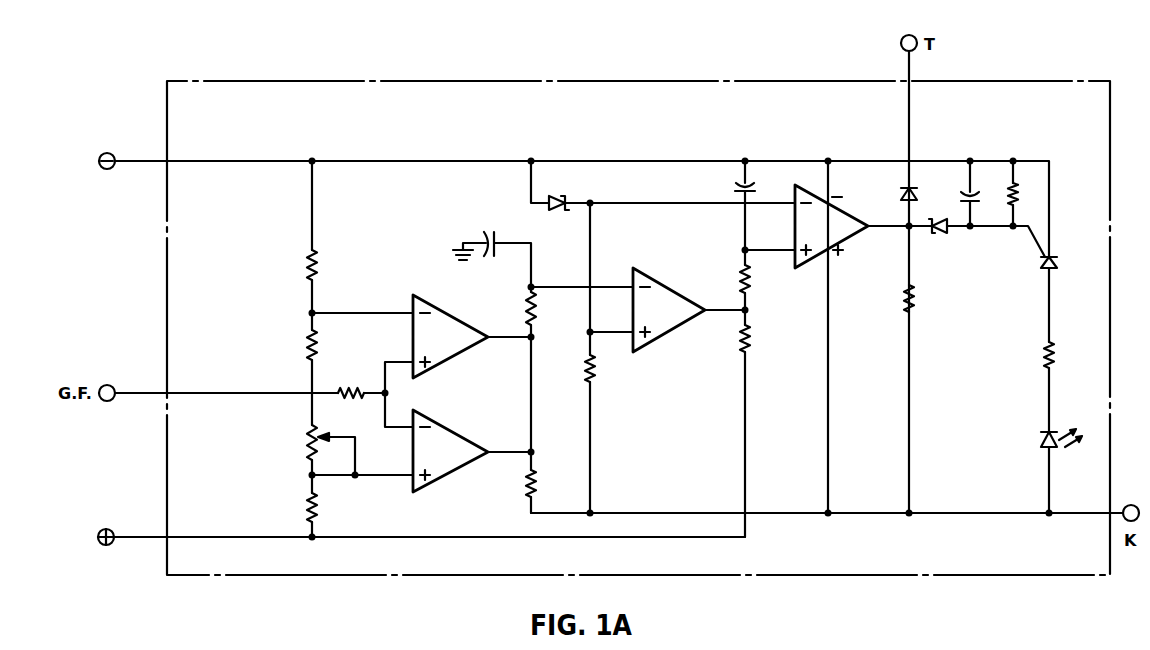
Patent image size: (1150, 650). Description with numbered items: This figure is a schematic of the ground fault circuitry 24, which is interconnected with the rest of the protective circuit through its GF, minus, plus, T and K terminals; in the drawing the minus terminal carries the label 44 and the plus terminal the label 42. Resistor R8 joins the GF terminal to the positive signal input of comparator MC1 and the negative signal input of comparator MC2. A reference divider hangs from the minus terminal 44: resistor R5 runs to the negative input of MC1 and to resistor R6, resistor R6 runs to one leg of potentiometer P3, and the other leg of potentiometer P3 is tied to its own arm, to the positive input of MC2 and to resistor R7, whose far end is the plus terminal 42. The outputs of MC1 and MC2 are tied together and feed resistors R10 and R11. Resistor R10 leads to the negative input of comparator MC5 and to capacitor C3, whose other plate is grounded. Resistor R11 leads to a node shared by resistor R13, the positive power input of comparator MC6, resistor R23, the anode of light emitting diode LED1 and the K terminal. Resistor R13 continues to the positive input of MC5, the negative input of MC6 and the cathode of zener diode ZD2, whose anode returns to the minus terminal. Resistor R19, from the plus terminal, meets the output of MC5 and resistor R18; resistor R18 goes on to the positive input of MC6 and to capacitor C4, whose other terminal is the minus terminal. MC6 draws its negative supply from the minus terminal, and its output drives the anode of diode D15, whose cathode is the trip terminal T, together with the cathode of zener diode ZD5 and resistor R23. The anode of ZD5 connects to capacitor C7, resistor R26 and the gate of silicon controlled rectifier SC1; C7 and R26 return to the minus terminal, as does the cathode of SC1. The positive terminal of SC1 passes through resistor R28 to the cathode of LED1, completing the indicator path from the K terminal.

The ground fault circuitry 24 is at (650, 129).
The positive supply terminal 42 is at (101, 546).
The negative supply terminal 44 is at (112, 152).
The resistor R5 is at (318, 266).
The resistor R6 is at (318, 349).
The resistor R7 is at (319, 509).
The resistor R8 is at (360, 388).
The potentiometer P3 is at (318, 429).
The resistor R10 is at (538, 312).
The resistor R11 is at (538, 478).
The resistor R13 is at (597, 369).
The resistor R18 is at (752, 275).
The resistor R19 is at (750, 342).
The resistor R23 is at (916, 298).
The resistor R26 is at (1006, 196).
The resistor R28 is at (1056, 352).
The capacitor C3 is at (492, 231).
The capacitor C4 is at (733, 191).
The capacitor C7 is at (960, 196).
The zener diode ZD2 is at (562, 196).
The zener diode ZD5 is at (936, 235).
The diode D15 is at (898, 196).
The comparator MC1 is at (450, 336).
The comparator MC2 is at (450, 451).
The comparator MC5 is at (669, 310).
The comparator MC6 is at (831, 226).
The silicon controlled rectifier SC1 is at (1058, 263).
The light emitting diode LED1 is at (1038, 442).